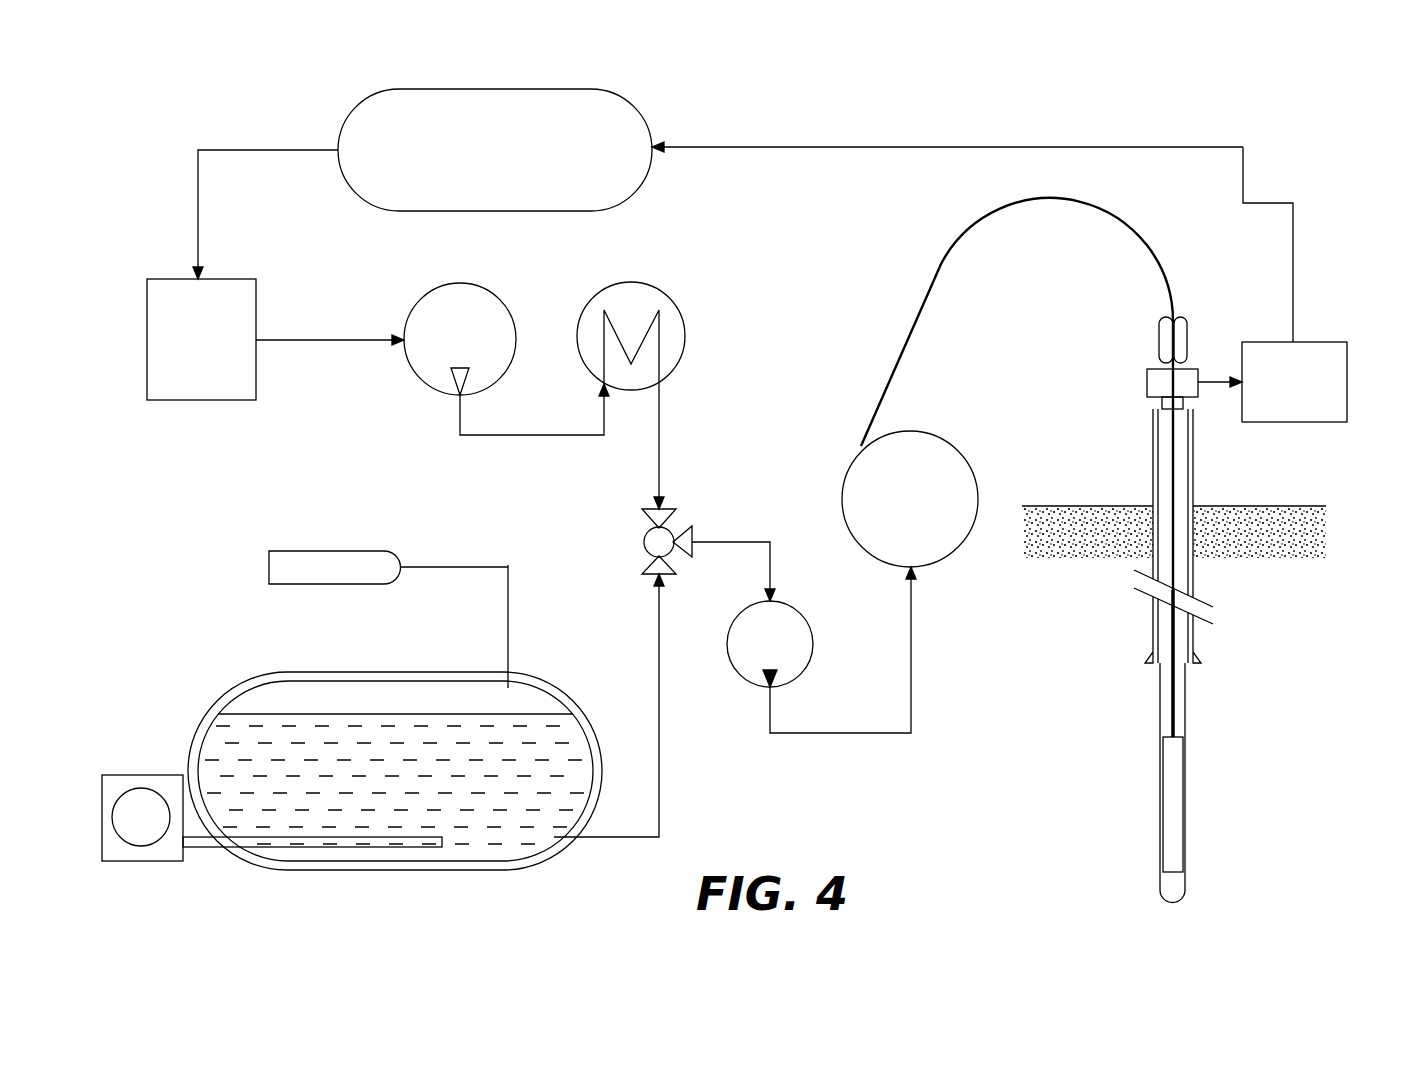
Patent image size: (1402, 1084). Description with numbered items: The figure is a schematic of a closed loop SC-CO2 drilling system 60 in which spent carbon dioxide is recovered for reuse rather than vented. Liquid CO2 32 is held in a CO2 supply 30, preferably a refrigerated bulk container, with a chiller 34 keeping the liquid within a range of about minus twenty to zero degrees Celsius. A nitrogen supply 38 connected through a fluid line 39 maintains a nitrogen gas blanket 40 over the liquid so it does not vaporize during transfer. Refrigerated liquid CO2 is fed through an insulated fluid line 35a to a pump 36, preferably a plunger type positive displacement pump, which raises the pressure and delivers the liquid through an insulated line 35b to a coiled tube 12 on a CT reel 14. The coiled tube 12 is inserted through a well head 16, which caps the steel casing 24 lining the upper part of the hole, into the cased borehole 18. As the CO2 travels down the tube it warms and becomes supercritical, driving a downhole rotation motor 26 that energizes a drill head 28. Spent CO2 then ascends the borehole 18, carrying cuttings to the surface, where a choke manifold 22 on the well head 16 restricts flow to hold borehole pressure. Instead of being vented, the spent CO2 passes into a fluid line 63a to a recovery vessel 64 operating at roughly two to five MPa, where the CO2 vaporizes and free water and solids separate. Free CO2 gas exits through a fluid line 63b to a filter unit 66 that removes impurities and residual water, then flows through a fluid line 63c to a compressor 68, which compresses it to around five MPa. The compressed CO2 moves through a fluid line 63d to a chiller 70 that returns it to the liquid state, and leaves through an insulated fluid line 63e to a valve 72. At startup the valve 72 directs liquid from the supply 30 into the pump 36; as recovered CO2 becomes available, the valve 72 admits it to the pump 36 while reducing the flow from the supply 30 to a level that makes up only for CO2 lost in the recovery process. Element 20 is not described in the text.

The coiled tube 12 is at (1145, 237).
The CT reel 14 is at (967, 458).
The well head 16 is at (1147, 369).
The cased borehole 18 is at (1163, 477).
The ground surface 20 is at (1237, 506).
The choke manifold 22 is at (1318, 342).
The steel casing 24 is at (1194, 577).
The downhole rotation motor 26 is at (1185, 797).
The drill head 28 is at (1160, 890).
The CO2 supply 30 is at (234, 690).
The liquid CO2 32 is at (306, 720).
The chiller 34 is at (165, 861).
The insulated fluid line 35a is at (637, 837).
The insulated line 35b is at (911, 716).
The pump 36 is at (746, 683).
The nitrogen supply 38 is at (341, 551).
The fluid line 39 is at (470, 567).
The nitrogen gas blanket 40 is at (475, 626).
The closed loop SC-CO2 drilling system 60 is at (1208, 238).
The fluid line 63a is at (809, 147).
The fluid line 63b is at (282, 150).
The fluid line 63c is at (348, 340).
The fluid line 63d is at (498, 437).
The insulated fluid line 63e is at (661, 445).
The recovery vessel 64 is at (363, 211).
The filter unit 66 is at (250, 400).
The compressor 68 is at (490, 298).
The chiller 70 is at (671, 298).
The valve 72 is at (644, 542).